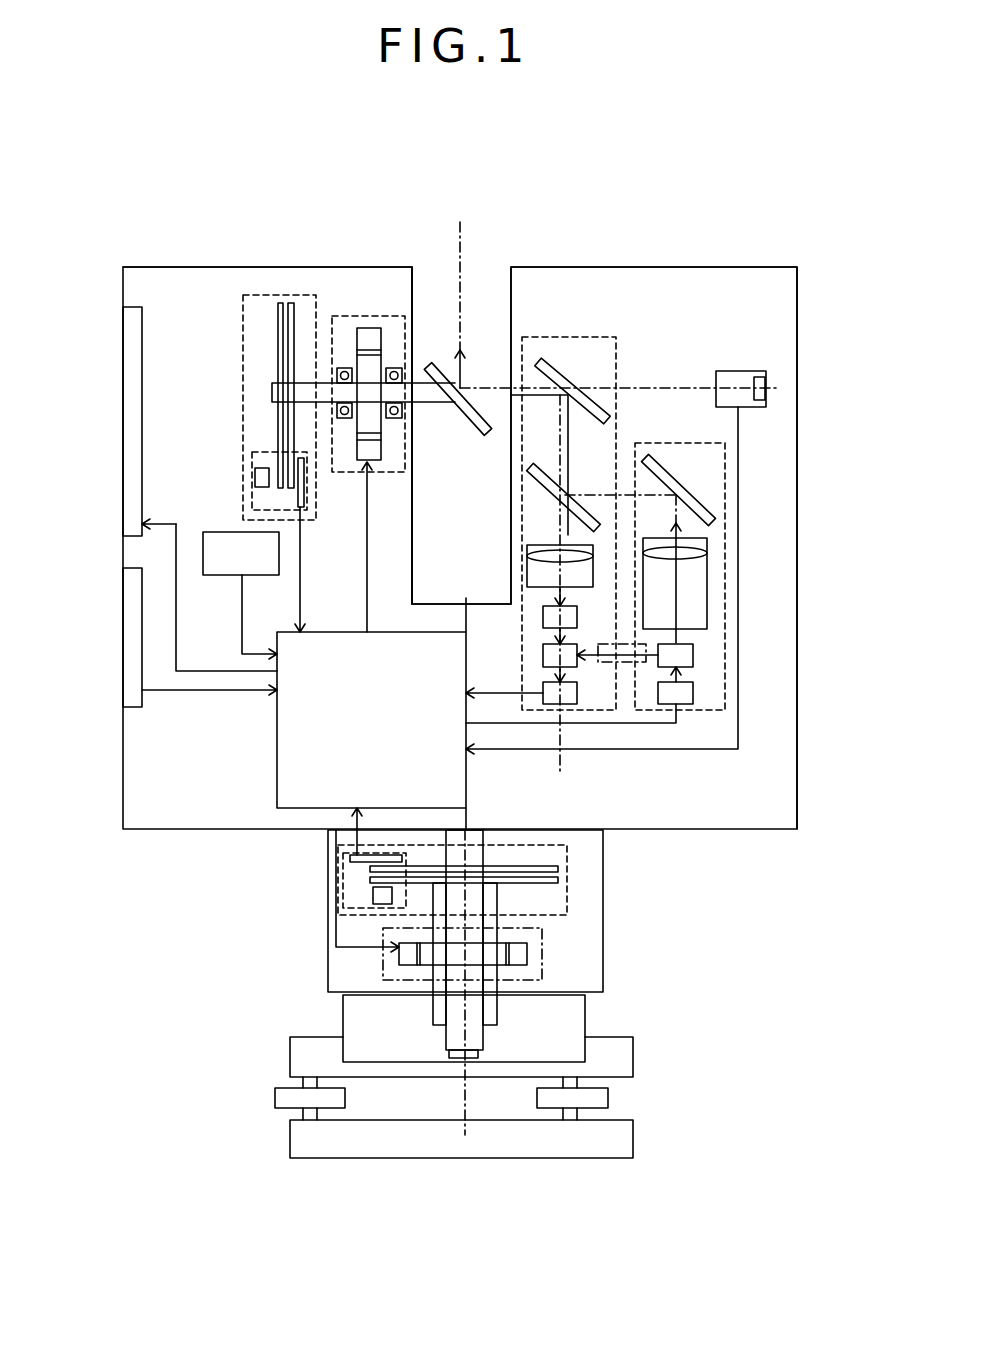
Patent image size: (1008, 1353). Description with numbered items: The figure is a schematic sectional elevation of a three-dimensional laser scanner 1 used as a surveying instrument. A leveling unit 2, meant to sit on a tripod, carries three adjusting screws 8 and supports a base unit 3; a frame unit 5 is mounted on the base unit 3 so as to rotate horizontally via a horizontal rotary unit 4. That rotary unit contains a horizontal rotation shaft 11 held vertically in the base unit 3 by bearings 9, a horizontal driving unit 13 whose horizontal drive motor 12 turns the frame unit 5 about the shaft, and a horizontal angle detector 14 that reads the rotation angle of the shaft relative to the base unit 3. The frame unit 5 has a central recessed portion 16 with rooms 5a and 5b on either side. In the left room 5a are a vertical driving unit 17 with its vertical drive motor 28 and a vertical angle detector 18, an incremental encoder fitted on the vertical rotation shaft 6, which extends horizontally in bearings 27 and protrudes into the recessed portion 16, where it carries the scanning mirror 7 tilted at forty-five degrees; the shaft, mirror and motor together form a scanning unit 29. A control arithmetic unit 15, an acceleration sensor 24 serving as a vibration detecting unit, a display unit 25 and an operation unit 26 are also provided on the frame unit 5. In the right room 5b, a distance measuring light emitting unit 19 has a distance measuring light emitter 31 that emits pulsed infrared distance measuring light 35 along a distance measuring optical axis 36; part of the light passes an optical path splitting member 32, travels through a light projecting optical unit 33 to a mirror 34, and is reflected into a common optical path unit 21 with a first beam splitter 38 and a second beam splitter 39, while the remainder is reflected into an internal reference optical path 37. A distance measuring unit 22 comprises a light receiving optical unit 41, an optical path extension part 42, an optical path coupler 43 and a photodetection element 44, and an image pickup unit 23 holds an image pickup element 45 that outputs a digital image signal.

The three-dimensional laser scanner 1 is at (146, 197).
The leveling unit 2 is at (249, 1104).
The base unit 3 is at (585, 1012).
The horizontal rotary unit 4 is at (603, 893).
The frame unit 5 is at (225, 830).
The room 5a is at (208, 317).
The room 5b is at (723, 319).
The vertical rotation shaft 6 is at (428, 408).
The scanning mirror 7 is at (428, 362).
The adjusting screw 8 is at (608, 1098).
The bearing 9 is at (497, 1010).
The horizontal rotation shaft 11 is at (433, 1002).
The horizontal drive motor 12 is at (527, 950).
The horizontal driving unit 13 is at (543, 963).
The horizontal angle detector 14 is at (567, 877).
The control arithmetic unit 15 is at (277, 755).
The recessed portion 16 is at (446, 508).
The vertical driving unit 17 is at (378, 316).
The vertical angle detector 18 is at (243, 393).
The distance measuring light emitting unit 19 is at (727, 660).
The common optical path unit 21 is at (530, 337).
The distance measuring unit 22 is at (512, 595).
The image pickup unit 23 is at (752, 372).
The acceleration sensor 24 is at (230, 532).
The display unit 25 is at (123, 366).
The operation unit 26 is at (123, 638).
The bearing 27 is at (340, 420).
The vertical drive motor 28 is at (365, 328).
The scanning unit 29 is at (431, 288).
The distance measuring light emitter 31 is at (685, 705).
The optical path splitting member 32 is at (692, 667).
The light projecting optical unit 33 is at (708, 562).
The mirror 34 is at (697, 490).
The distance measuring light 35 is at (680, 600).
The distance measuring optical axis 36 is at (463, 374).
The internal reference optical path 37 is at (622, 663).
The first beam splitter 38 is at (548, 472).
The second beam splitter 39 is at (550, 358).
The light receiving optical unit 41 is at (527, 548).
The optical path extension part 42 is at (543, 617).
The optical path coupler 43 is at (543, 660).
The photodetection element 44 is at (548, 705).
The image pickup element 45 is at (756, 400).